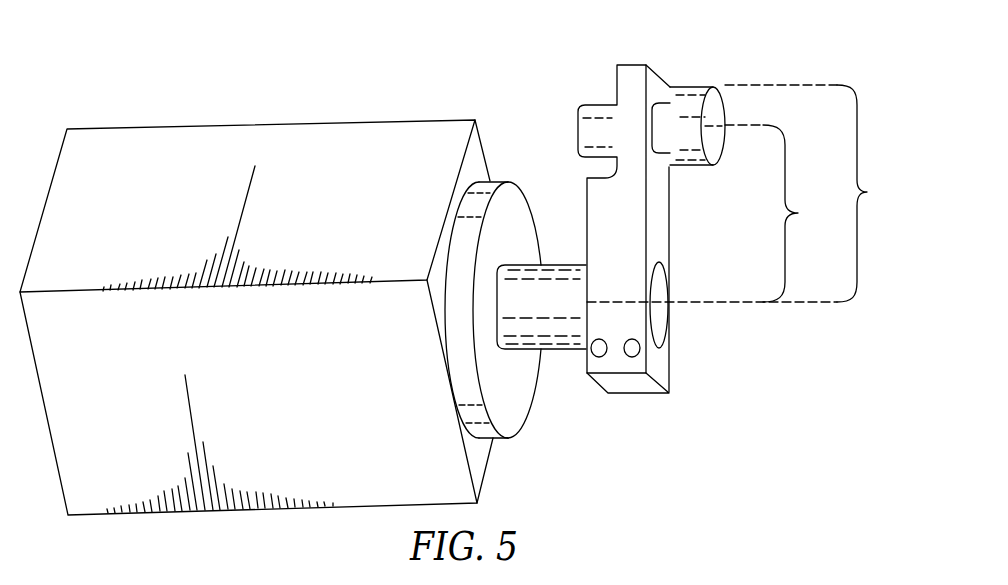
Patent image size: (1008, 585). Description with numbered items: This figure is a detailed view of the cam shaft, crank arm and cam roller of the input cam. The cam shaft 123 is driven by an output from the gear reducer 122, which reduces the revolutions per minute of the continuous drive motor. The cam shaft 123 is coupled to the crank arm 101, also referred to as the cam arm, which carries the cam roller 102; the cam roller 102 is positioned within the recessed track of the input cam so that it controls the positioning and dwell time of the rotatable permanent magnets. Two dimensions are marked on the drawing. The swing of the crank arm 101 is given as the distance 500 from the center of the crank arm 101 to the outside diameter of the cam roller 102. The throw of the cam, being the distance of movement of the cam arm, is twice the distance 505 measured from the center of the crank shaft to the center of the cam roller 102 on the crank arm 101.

The gear reducer 122 is at (273, 124).
The cam shaft 123 is at (550, 264).
The crank arm 101 is at (628, 65).
The cam roller 102 is at (725, 103).
The distance 505 is at (780, 213).
The distance 500 is at (815, 193).